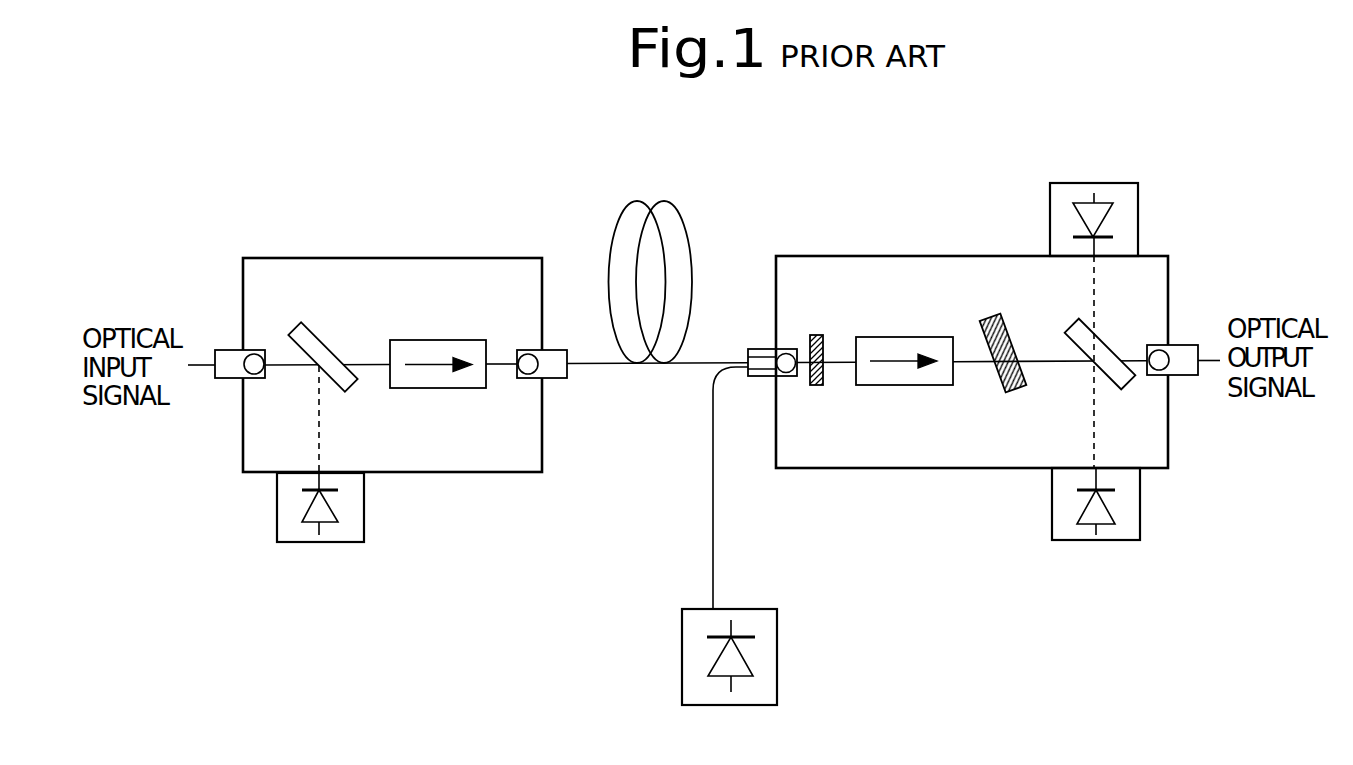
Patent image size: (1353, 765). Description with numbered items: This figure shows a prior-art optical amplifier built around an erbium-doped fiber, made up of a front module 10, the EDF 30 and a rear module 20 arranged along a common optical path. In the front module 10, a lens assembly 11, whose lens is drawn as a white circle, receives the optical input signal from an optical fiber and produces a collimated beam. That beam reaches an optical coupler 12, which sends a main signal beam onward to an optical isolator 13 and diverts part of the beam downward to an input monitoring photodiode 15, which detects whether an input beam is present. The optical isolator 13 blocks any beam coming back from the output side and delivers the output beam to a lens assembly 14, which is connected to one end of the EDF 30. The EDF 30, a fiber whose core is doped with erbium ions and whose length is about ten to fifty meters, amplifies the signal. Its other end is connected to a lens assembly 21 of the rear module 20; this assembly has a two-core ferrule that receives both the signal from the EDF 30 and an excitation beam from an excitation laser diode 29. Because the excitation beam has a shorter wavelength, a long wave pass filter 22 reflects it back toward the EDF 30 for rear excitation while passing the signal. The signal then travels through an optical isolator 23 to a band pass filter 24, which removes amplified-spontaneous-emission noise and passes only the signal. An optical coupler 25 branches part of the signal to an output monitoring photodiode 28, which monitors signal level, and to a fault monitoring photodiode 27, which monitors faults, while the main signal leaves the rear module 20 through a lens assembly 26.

The front module 10 is at (438, 258).
The lens assembly 11 is at (224, 350).
The optical coupler 12 is at (328, 343).
The optical isolator 13 is at (474, 340).
The lens assembly 14 is at (558, 350).
The input monitoring photodiode 15 is at (277, 510).
The rear module 20 is at (866, 256).
The lens assembly 21 is at (762, 349).
The long wave pass filter 22 is at (823, 342).
The optical isolator 23 is at (947, 337).
The band pass filter 24 is at (1012, 338).
The optical coupler 25 is at (1130, 384).
The lens assembly 26 is at (1180, 345).
The fault monitoring photodiode 27 is at (1138, 216).
The output monitoring photodiode 28 is at (1140, 512).
The excitation laser diode 29 is at (748, 609).
The erbium-doped fiber 30 is at (683, 215).